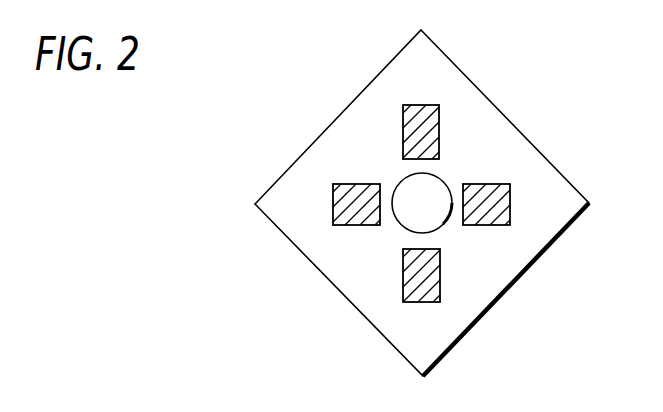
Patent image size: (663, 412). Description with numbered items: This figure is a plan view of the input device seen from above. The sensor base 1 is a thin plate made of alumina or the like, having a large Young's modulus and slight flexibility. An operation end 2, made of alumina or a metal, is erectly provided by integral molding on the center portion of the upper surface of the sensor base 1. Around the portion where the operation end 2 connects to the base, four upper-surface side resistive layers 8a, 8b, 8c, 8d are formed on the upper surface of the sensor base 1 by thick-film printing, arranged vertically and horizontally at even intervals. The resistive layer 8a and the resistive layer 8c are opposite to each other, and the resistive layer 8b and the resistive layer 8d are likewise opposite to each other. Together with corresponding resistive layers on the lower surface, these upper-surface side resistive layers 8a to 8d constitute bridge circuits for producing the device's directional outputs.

The sensor base 1 is at (485, 123).
The operation end 2 is at (403, 229).
The upper-surface side resistive layer 8a is at (333, 204).
The upper-surface side resistive layer 8b is at (440, 275).
The upper-surface side resistive layer 8c is at (483, 184).
The upper-surface side resistive layer 8d is at (420, 105).